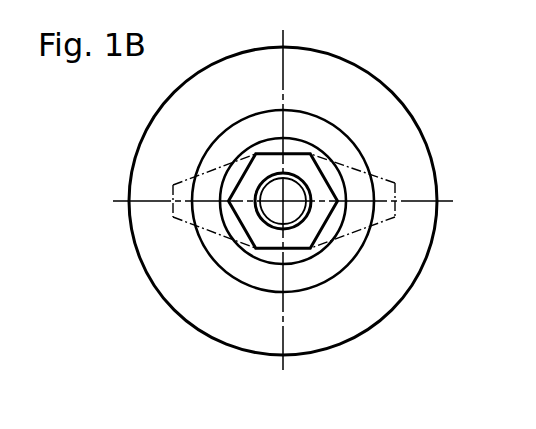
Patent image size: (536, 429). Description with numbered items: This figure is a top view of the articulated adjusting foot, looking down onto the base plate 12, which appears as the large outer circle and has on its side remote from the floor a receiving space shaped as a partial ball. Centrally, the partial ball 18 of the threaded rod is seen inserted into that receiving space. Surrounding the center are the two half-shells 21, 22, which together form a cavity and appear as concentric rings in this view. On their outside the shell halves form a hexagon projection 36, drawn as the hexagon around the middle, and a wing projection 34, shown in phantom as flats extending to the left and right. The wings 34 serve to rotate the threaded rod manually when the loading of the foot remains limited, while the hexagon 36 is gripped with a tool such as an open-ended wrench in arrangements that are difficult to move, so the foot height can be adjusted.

The base plate 12 is at (338, 145).
The partial ball 18 is at (306, 138).
The half-shell 21 is at (333, 175).
The half-shell 22 is at (235, 137).
The wing projection 34 is at (173, 215).
The hexagon projection 36 is at (263, 248).